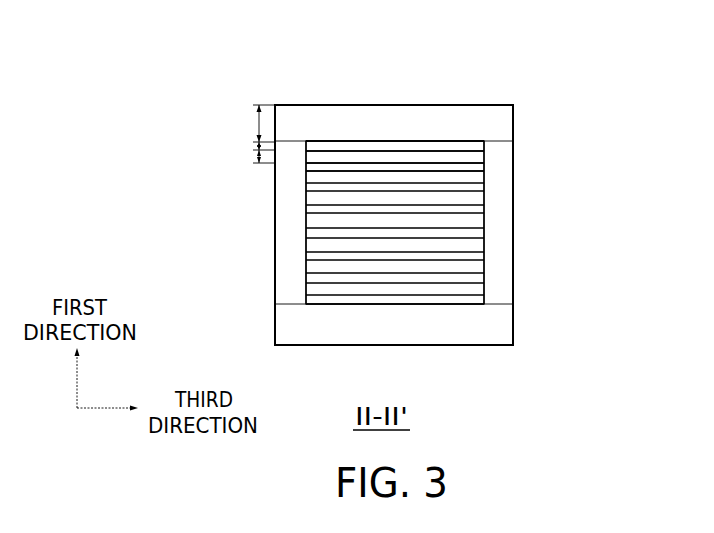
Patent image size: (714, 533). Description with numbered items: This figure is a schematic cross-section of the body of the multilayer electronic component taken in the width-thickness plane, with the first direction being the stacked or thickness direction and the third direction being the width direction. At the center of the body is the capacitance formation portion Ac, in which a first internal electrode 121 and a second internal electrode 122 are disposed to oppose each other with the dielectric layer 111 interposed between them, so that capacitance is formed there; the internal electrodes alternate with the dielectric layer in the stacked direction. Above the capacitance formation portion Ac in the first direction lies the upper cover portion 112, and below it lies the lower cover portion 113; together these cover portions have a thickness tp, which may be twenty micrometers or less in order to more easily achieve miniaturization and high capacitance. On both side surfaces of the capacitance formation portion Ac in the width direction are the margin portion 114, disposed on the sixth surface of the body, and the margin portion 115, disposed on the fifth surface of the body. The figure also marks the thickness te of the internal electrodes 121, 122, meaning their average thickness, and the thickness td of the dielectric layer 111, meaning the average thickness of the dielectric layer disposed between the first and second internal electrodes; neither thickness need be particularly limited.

The upper cover portion 112 is at (401, 120).
The lower cover portion 113 is at (507, 325).
The margin portion 114 is at (295, 260).
The margin portion 115 is at (507, 248).
The dielectric layer 111 is at (482, 156).
The first internal electrode 121 is at (483, 142).
The second internal electrode 122 is at (482, 165).
The capacitance formation portion Ac is at (299, 226).
The thickness of the cover portions tp is at (254, 123).
The thickness of the internal electrodes te is at (253, 146).
The thickness of the dielectric layer td is at (253, 157).